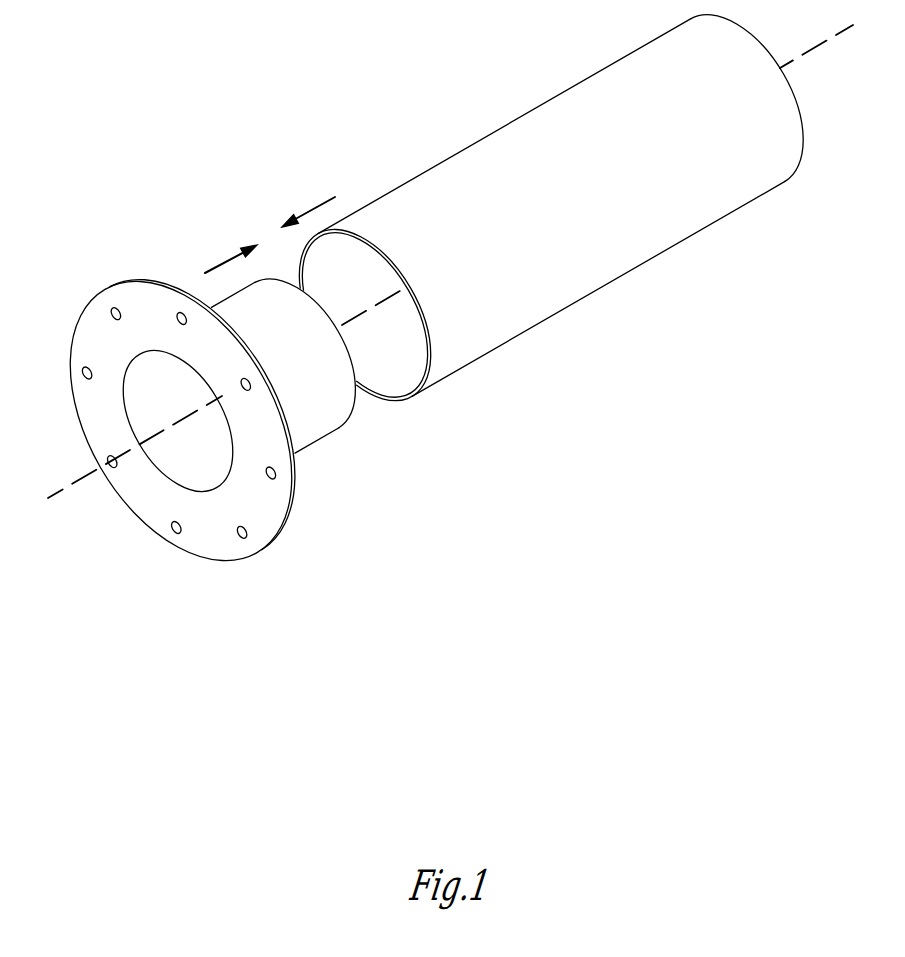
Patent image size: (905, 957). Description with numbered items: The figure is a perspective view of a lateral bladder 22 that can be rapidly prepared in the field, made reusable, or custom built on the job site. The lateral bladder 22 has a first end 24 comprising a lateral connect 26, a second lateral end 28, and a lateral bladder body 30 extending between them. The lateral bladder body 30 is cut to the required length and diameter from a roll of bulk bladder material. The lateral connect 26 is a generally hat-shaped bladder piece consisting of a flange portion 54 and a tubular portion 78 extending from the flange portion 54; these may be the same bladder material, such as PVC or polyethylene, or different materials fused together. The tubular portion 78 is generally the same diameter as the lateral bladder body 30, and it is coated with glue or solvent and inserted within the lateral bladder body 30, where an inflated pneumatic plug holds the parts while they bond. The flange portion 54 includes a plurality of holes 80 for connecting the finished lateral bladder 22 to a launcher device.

The lateral bladder 22 is at (322, 122).
The first end 24 is at (100, 259).
The lateral connect 26 is at (283, 525).
The second lateral end 28 is at (797, 101).
The lateral bladder body 30 is at (600, 281).
The flange portion 54 is at (132, 508).
The tubular portion 78 is at (323, 440).
The holes 80 is at (172, 532).